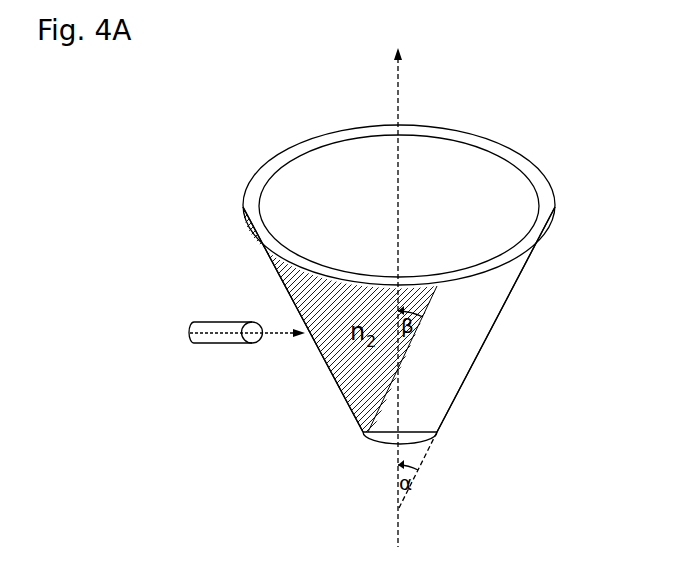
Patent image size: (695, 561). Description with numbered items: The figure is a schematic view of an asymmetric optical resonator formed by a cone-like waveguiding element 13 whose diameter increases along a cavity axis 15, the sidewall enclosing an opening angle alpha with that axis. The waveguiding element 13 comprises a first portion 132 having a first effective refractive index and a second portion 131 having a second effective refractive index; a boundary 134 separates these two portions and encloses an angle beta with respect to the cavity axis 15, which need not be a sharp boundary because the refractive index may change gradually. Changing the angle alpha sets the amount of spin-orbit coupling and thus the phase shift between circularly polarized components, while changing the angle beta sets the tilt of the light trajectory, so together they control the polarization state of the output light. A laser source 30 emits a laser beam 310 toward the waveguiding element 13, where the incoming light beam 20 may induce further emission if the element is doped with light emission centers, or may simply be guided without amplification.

The waveguiding element 13 is at (538, 168).
The cavity axis 15 is at (398, 110).
The incoming light beam 20 is at (384, 440).
The laser source 30 is at (205, 322).
The laser beam 310 is at (280, 340).
The second portion 131 is at (315, 355).
The first portion 132 is at (448, 383).
The boundary 134 is at (430, 305).